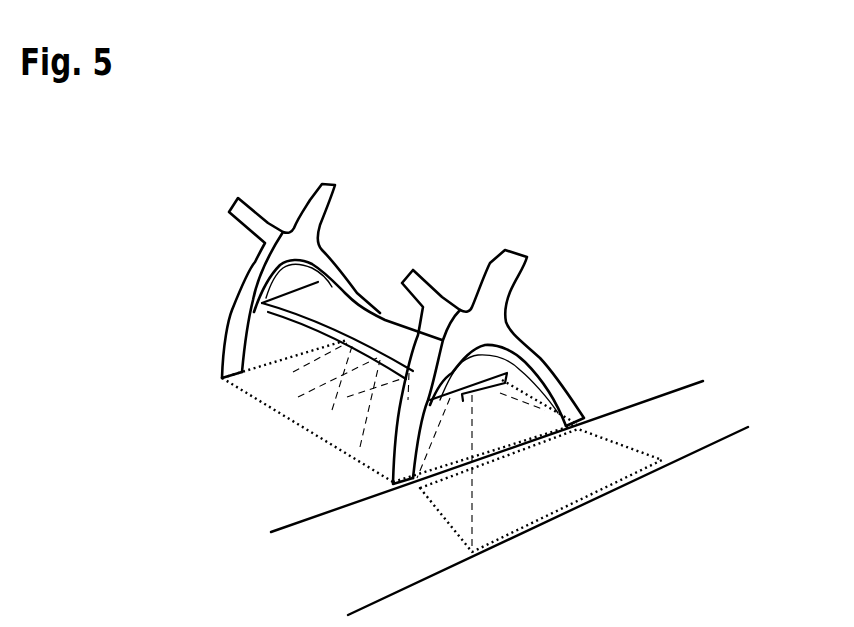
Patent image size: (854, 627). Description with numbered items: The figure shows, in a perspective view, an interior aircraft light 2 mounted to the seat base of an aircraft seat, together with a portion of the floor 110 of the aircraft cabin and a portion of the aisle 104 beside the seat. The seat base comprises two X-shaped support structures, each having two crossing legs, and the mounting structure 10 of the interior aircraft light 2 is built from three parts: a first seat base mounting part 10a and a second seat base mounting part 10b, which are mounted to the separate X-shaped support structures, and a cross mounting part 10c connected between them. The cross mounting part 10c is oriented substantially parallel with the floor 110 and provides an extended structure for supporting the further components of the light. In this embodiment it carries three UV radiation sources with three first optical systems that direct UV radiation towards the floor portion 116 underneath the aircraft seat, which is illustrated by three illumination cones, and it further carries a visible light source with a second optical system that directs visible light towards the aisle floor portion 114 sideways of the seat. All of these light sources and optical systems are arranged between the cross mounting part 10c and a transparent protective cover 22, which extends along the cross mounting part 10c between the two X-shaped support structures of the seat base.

The interior aircraft light 2 is at (527, 313).
The mounting structure 10 is at (388, 275).
The first seat base mounting part 10a is at (473, 363).
The second seat base mounting part 10b is at (305, 272).
The cross mounting part 10c is at (395, 330).
The transparent protective cover 22 is at (293, 307).
The aisle 104 is at (713, 423).
The floor 110 is at (240, 484).
The aisle floor portion 114 is at (521, 505).
The floor portion underneath the aircraft seat 116 is at (348, 443).